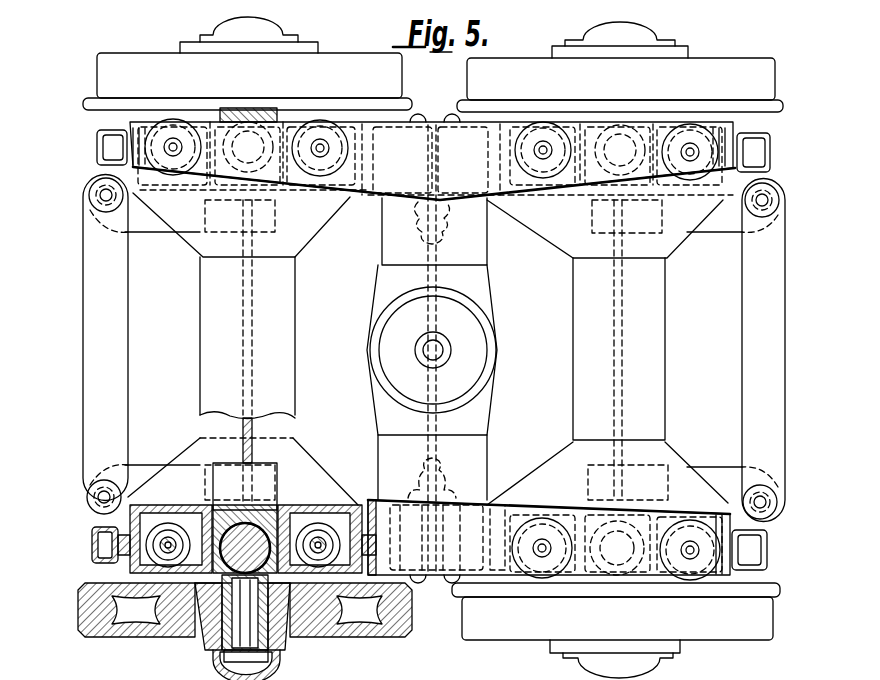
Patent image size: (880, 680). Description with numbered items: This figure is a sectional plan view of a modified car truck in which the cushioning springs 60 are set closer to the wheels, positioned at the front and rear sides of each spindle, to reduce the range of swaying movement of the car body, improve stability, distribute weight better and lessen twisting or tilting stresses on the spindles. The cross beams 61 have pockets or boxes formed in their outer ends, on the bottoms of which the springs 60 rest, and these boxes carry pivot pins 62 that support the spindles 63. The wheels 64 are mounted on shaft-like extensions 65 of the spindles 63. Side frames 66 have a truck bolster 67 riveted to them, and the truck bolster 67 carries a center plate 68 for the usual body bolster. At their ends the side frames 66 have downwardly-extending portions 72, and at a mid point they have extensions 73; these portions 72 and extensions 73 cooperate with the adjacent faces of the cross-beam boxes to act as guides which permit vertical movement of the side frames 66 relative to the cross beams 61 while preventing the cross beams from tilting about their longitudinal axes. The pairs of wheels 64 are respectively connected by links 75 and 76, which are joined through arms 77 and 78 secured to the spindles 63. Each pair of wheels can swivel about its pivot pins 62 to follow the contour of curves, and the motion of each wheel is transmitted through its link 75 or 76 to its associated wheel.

The cushioning springs 60 is at (320, 540).
The cross beams 61 is at (275, 325).
The pivot pins 62 is at (250, 128).
The spindles 63 is at (227, 123).
The wheels 64 is at (518, 655).
The shaft-like extensions 65 is at (225, 650).
The side frames 66 is at (467, 178).
The truck bolster 67 is at (468, 449).
The center plate 68 is at (473, 333).
The downwardly-extending portions 72 is at (97, 142).
The extensions 73 is at (368, 498).
The link 75 is at (88, 323).
The link 76 is at (752, 370).
The arms 77 is at (150, 225).
The arms 78 is at (700, 228).